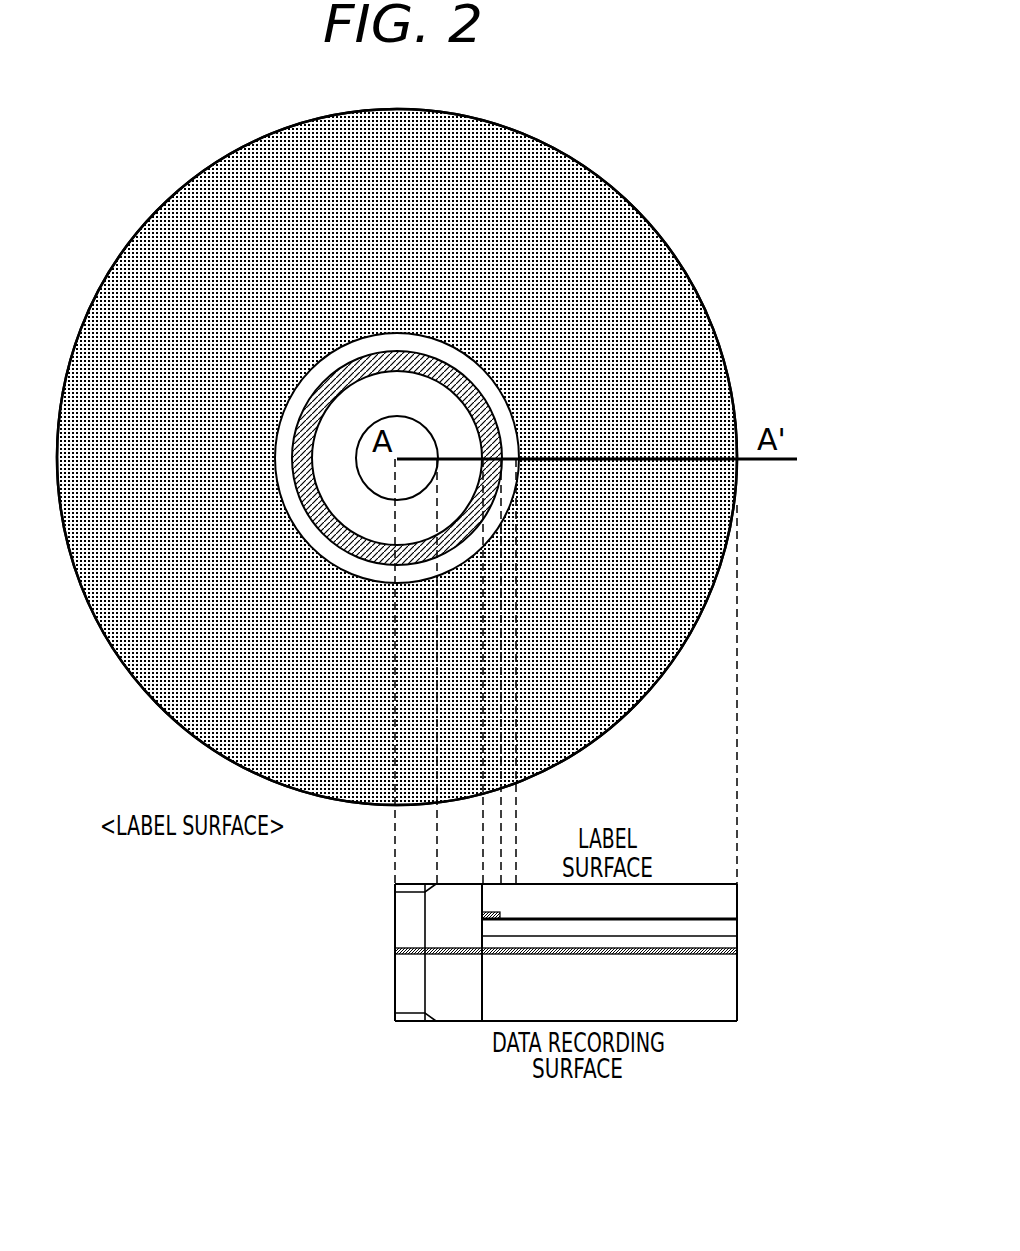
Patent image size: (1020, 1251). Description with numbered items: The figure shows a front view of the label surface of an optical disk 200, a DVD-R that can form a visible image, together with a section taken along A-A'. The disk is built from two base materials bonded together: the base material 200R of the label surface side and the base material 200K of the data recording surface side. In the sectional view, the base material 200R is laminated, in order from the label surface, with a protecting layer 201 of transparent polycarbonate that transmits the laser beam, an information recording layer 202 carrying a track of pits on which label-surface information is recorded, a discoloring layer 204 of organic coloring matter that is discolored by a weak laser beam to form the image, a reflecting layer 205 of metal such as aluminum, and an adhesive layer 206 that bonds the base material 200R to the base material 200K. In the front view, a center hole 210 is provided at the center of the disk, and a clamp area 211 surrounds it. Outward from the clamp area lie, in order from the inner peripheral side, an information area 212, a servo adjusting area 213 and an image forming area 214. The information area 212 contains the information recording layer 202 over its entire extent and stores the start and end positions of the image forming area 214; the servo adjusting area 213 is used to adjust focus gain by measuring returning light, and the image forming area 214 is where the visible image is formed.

The optical disk 200 is at (116, 213).
The image forming area 214 is at (705, 320).
The center hole 210 is at (402, 425).
The clamp area 211 is at (445, 413).
The information area 212 is at (488, 400).
The servo adjusting area 213 is at (517, 442).
The information recording layer 202 is at (486, 911).
The base material of the label surface side 200R is at (688, 873).
The protecting layer 201 is at (735, 905).
The discoloring layer 204 is at (735, 927).
The reflecting layer 205 is at (730, 941).
The adhesive layer 206 is at (730, 958).
The base material of the data recording surface side 200K is at (696, 1042).